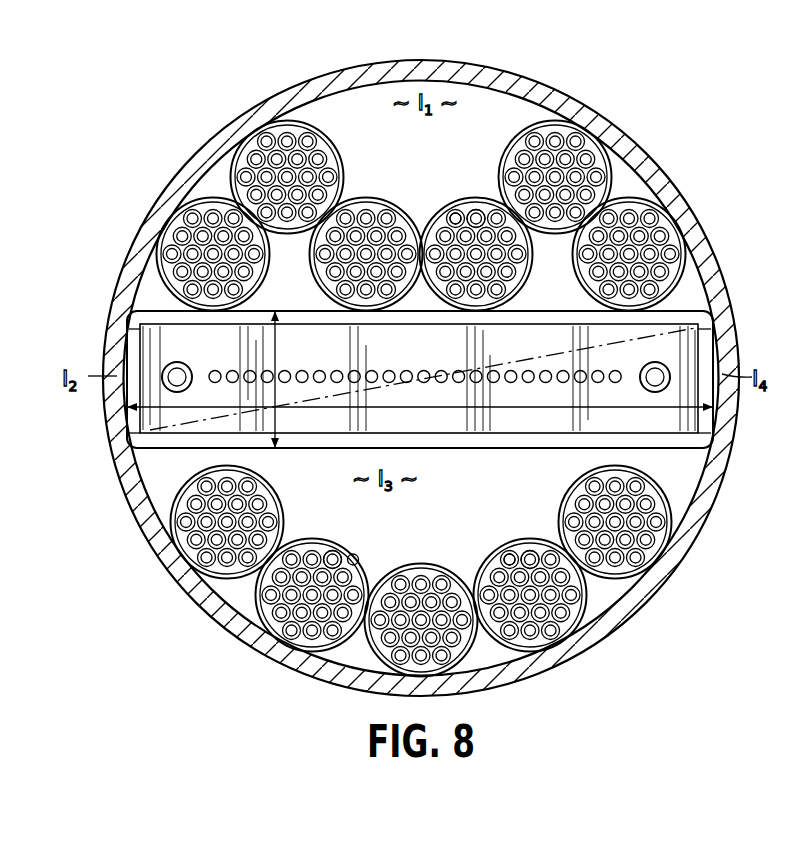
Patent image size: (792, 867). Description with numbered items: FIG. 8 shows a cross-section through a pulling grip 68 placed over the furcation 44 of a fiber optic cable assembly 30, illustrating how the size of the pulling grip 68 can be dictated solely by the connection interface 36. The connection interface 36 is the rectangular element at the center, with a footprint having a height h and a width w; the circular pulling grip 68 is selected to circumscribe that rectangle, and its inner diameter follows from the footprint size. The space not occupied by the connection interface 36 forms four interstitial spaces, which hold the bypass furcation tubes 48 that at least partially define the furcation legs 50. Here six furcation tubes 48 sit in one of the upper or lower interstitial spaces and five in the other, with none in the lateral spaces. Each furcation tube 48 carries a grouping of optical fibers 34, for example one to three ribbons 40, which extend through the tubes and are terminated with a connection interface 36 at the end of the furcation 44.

The fiber optic cable assembly 30 is at (208, 58).
The pulling grip 68 is at (420, 60).
The furcation 44 is at (165, 167).
The furcation leg 50 is at (387, 178).
The furcation tube 48 is at (477, 199).
The ribbon 40 is at (469, 212).
The optical fiber 34 is at (452, 217).
The connection interface 36 is at (468, 451).